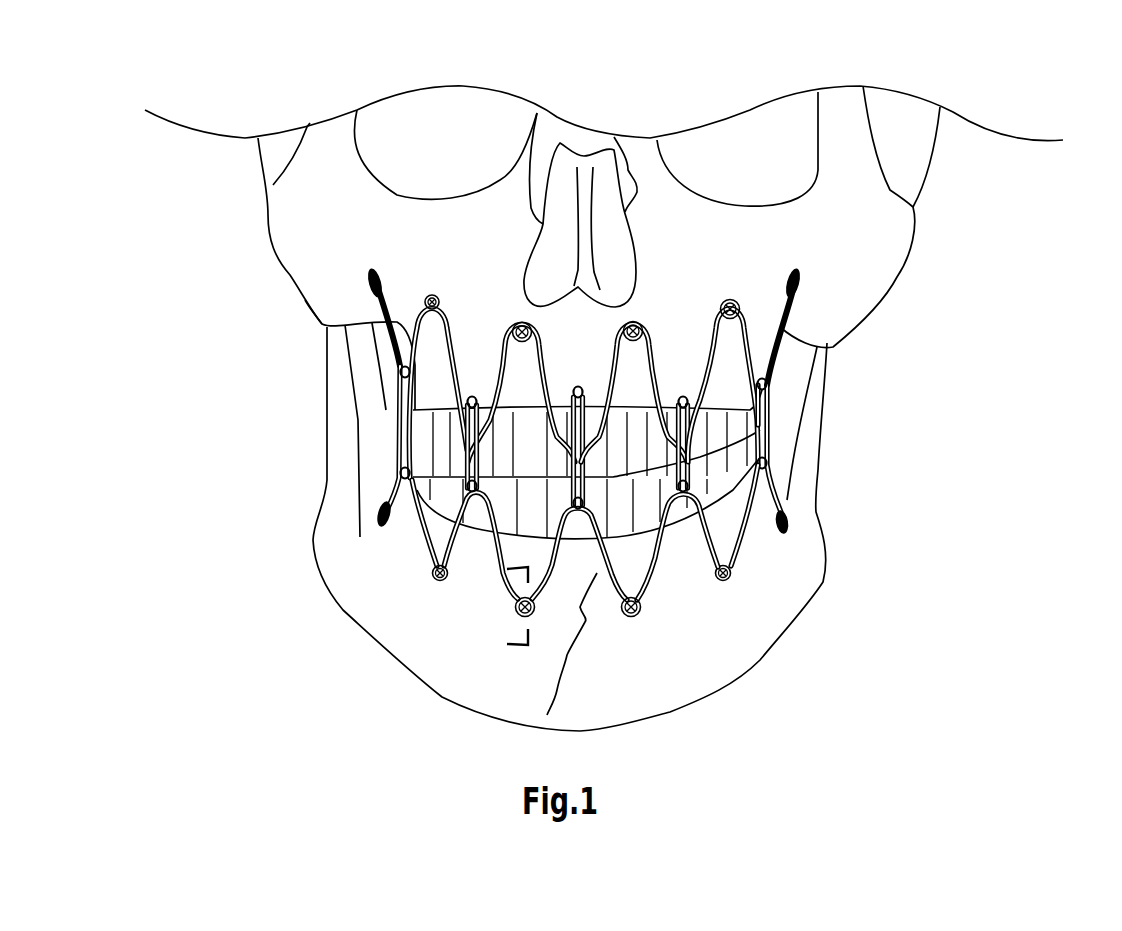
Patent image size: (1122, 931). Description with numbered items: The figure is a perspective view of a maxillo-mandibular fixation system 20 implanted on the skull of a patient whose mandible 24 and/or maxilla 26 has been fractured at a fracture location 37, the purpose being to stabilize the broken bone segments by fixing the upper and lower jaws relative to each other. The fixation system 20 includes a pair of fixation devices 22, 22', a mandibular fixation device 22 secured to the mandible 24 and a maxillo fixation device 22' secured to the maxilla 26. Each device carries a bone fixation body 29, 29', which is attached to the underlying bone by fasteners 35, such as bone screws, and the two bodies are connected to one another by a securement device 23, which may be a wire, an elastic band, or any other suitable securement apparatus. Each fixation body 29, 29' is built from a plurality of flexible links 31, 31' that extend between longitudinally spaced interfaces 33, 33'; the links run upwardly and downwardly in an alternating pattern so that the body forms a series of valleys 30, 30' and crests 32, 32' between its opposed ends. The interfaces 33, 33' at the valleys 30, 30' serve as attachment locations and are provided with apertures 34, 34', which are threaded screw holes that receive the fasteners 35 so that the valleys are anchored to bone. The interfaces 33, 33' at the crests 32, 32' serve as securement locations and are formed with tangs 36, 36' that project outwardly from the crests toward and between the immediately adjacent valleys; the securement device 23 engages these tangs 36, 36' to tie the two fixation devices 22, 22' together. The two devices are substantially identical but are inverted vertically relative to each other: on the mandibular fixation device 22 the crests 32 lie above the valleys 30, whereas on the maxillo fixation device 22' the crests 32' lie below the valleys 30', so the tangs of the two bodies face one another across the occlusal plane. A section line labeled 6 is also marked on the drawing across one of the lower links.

The fixation system 20 is at (820, 278).
The mandibular fixation device 22 is at (420, 575).
The maxillo fixation device 22' is at (425, 384).
The securement device 23 is at (420, 413).
The mandible 24 is at (810, 510).
The maxilla 26 is at (338, 285).
The bone fixation body 29 is at (824, 559).
The bone fixation body 29' is at (857, 401).
The valleys 30 is at (472, 675).
The valleys 30' is at (561, 326).
The flexible links 31 is at (788, 588).
The flexible links 31' is at (867, 388).
The crests 32 is at (677, 561).
The crests 32' is at (525, 414).
The interfaces 33 is at (626, 594).
The interfaces 33' is at (628, 349).
The apertures 34 is at (675, 626).
The apertures 34' is at (669, 289).
The fasteners 35 is at (645, 329).
The tangs 36 is at (689, 535).
The tangs 36' is at (683, 411).
The fracture location 37 is at (545, 677).
The section line 6- 6 is at (517, 604).